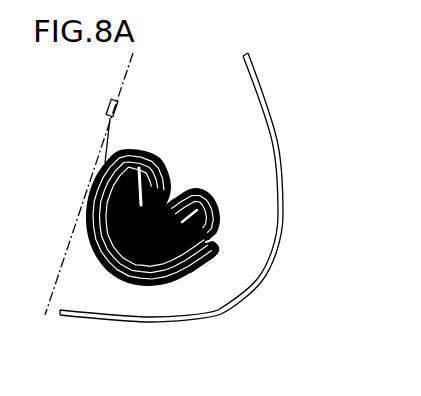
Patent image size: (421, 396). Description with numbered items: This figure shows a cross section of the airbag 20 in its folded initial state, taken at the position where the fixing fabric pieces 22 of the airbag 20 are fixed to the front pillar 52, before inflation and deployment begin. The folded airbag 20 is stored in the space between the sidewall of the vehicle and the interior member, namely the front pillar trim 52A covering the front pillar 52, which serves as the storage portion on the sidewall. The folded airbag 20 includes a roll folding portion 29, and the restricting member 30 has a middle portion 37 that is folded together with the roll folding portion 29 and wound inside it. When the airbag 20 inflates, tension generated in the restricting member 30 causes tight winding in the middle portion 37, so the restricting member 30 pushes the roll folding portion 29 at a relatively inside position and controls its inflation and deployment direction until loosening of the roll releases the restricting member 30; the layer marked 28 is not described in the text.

The front pillar 52 is at (128, 68).
The fixing fabric pieces 22 is at (109, 118).
The front pillar trim 52A is at (270, 112).
The restricting member 30 is at (194, 188).
The middle portion 37 is at (227, 242).
The airbag 20 is at (321, 278).
The roll folding portion 29 is at (221, 238).
The lower layer 28 is at (216, 256).